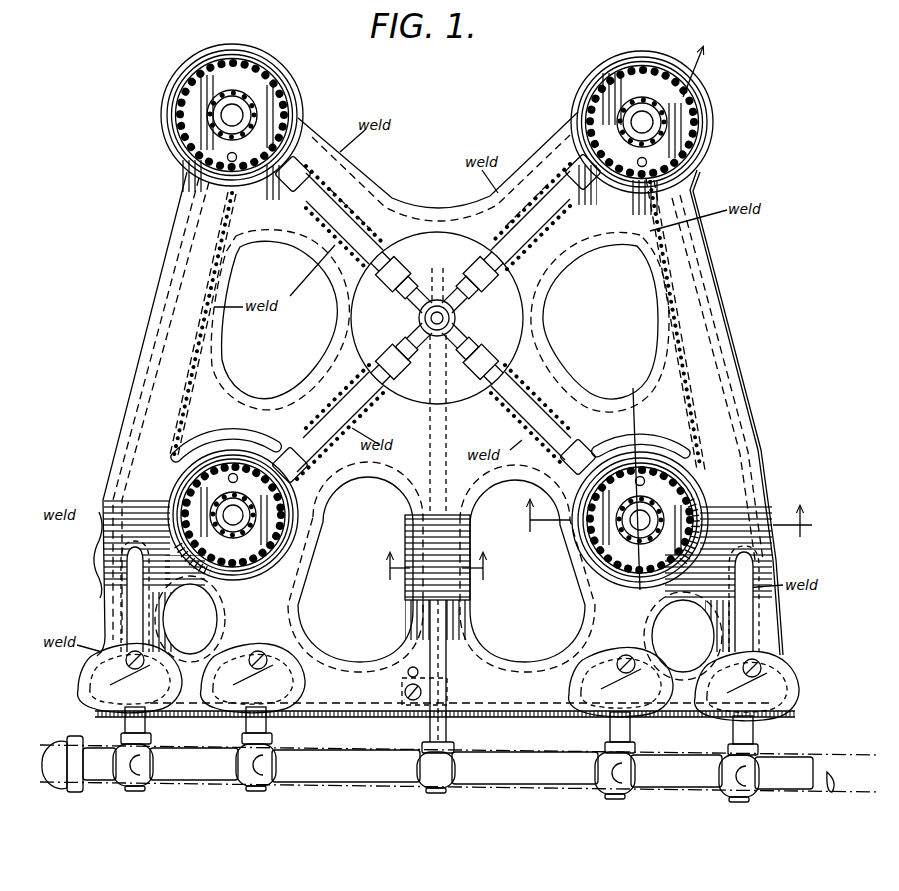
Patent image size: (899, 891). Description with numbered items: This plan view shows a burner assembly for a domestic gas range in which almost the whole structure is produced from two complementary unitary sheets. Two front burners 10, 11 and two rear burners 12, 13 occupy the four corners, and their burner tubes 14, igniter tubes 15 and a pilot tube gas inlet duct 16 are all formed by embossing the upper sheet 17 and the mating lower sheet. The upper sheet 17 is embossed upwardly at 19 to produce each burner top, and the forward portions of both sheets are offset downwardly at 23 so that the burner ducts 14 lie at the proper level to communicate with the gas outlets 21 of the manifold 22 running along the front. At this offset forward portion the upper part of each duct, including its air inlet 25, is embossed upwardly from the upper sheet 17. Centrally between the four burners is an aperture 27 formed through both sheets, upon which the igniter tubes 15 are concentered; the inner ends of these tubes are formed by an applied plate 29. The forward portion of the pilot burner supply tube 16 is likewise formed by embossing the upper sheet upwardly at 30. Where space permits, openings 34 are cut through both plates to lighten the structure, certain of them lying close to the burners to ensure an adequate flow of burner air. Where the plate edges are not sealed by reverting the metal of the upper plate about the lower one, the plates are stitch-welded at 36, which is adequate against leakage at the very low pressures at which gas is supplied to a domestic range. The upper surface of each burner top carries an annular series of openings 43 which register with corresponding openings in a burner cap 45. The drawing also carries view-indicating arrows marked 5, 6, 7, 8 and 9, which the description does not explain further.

The section line 5 is at (603, 735).
The section arrow 6 is at (547, 524).
The direction arrow 7 is at (711, 72).
The vertical strut 8 is at (440, 264).
The screw fastener 9 is at (402, 692).
The front burner 10 is at (298, 540).
The front burner 11 is at (560, 552).
The rear burner 12 is at (270, 100).
The rear burner 13 is at (590, 105).
The burner tube 14 is at (745, 622).
The igniter tube 15 is at (330, 207).
The pilot tube gas inlet duct 16 is at (437, 622).
The upper unitary sheet 17 is at (657, 316).
The upward embossing of upper sheet 19 is at (263, 82).
The gas outlet 21 is at (147, 723).
The manifold 22 is at (513, 790).
The downward offset 23 is at (98, 558).
The air inlet 25 is at (100, 683).
The aperture 27 is at (467, 323).
The applied plate 29 is at (520, 343).
The upward embossing for pilot tube 30 is at (430, 640).
The opening 34 is at (645, 305).
The stitch weld 36 is at (200, 348).
The annular series of openings 43 is at (690, 503).
The burner cap 45 is at (690, 470).